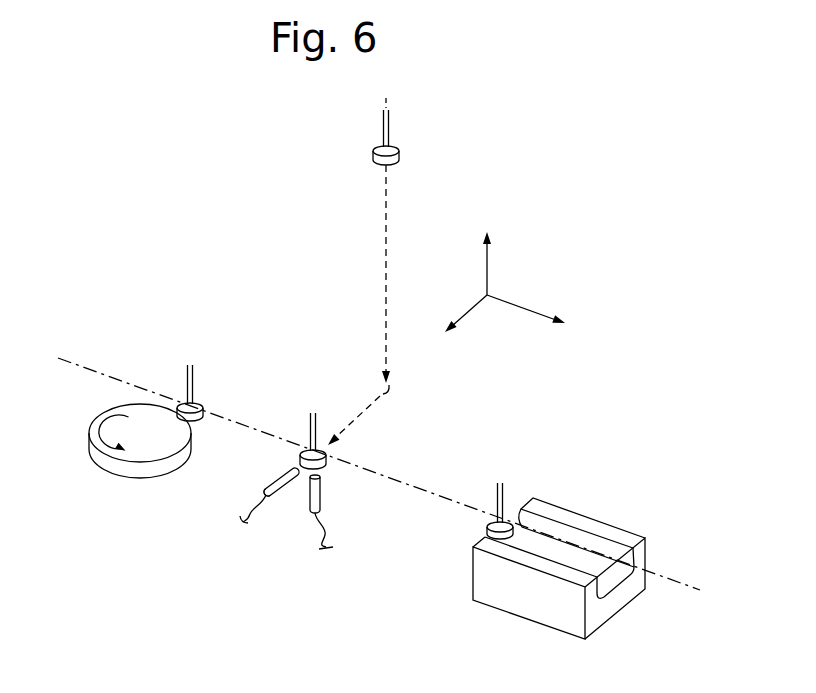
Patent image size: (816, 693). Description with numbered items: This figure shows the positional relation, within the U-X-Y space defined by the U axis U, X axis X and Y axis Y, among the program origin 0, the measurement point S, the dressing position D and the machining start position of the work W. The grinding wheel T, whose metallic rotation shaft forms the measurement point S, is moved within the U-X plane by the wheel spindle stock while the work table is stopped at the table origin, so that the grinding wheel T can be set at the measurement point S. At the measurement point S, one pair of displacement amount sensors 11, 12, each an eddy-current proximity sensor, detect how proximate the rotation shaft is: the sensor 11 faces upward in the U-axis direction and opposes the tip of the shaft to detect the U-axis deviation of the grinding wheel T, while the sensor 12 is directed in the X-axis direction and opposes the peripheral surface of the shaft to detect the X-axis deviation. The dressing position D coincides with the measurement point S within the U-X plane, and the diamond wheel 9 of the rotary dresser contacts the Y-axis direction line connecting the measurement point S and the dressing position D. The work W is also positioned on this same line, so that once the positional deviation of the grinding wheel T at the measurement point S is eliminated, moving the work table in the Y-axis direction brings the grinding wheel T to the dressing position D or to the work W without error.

The grinding wheel T is at (372, 152).
The program origin 0 is at (416, 150).
The measurement point S is at (329, 441).
The dressing position D is at (181, 393).
The diamond wheel 9 is at (91, 428).
The displacement amount sensor 11 is at (318, 497).
The displacement amount sensor 12 is at (268, 489).
The work W is at (543, 613).
The U-axis U is at (499, 263).
The X-axis X is at (465, 311).
The Y-axis Y is at (528, 305).